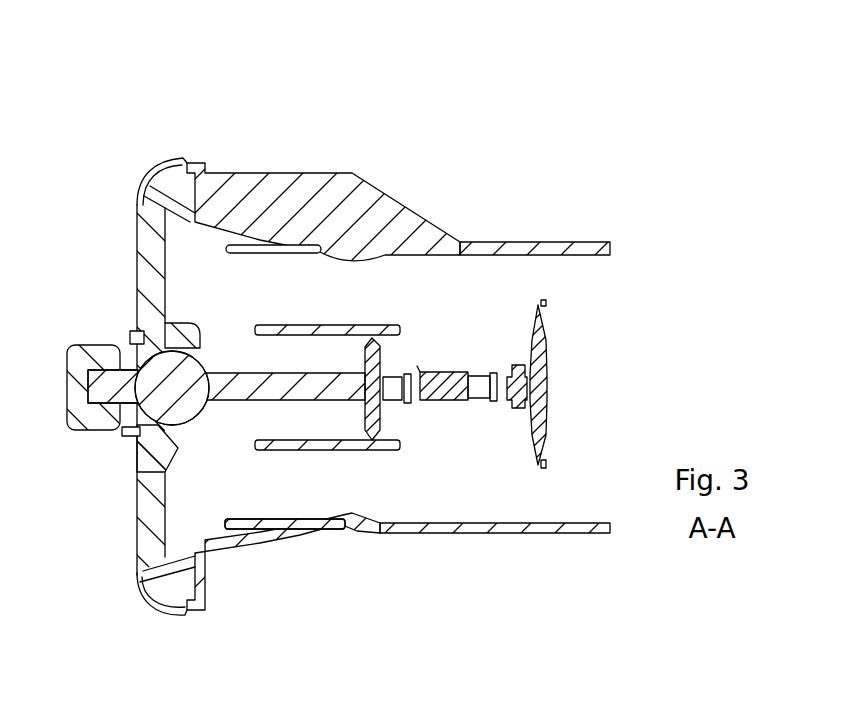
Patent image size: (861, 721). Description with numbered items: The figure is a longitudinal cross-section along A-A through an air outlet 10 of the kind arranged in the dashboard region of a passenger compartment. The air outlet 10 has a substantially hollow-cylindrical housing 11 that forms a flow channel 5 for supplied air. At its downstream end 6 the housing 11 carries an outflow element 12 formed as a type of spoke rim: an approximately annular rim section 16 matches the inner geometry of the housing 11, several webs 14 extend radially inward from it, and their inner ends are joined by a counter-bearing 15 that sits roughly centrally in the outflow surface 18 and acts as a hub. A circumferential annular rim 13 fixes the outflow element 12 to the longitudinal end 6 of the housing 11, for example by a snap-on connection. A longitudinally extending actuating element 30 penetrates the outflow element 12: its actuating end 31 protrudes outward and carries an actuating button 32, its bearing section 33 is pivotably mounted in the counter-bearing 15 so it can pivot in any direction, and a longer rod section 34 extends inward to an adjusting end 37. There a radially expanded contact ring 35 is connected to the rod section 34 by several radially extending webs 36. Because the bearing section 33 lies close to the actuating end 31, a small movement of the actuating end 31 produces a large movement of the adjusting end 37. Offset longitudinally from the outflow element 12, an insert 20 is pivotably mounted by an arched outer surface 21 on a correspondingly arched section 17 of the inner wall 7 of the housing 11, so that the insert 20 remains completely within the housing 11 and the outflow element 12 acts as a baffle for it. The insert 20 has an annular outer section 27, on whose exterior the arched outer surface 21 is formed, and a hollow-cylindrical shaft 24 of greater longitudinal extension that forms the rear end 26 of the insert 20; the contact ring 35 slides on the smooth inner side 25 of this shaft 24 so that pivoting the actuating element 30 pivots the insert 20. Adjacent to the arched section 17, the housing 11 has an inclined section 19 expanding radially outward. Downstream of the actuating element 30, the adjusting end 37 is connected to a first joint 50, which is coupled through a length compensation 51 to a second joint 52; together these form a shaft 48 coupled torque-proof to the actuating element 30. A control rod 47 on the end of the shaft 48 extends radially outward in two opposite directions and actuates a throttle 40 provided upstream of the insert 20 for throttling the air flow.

The flow channel 5 is at (495, 272).
The downstream end 6 is at (102, 212).
The inner wall 7 is at (440, 520).
The air outlet 10 is at (138, 85).
The housing 11 is at (437, 218).
The outflow element 12 is at (112, 484).
The circumferential annular rim 13 is at (164, 610).
The webs 14 is at (147, 508).
The counter-bearing 15 is at (127, 435).
The rim section 16 is at (160, 565).
The arched section 17 is at (309, 521).
The outflow surface 18 is at (90, 512).
The inclined section 19 is at (230, 238).
The insert 20 is at (328, 280).
The arched outer surface 21 is at (236, 244).
The shaft 24 is at (307, 323).
The inner side 25 is at (333, 338).
The rear end 26 is at (382, 311).
The outer section 27 is at (262, 240).
The actuating element 30 is at (216, 332).
The actuating end 31 is at (110, 309).
The actuating button 32 is at (78, 345).
The bearing section 33 is at (194, 405).
The rod section 34 is at (240, 372).
The contact ring 35 is at (374, 442).
The webs 36 is at (377, 414).
The adjusting end 37 is at (408, 349).
The throttle 40 is at (696, 683).
The control rod 47 is at (545, 413).
The shaft 48 is at (498, 428).
The first joint 50 is at (425, 354).
The length compensation 51 is at (456, 351).
The second joint 52 is at (501, 360).